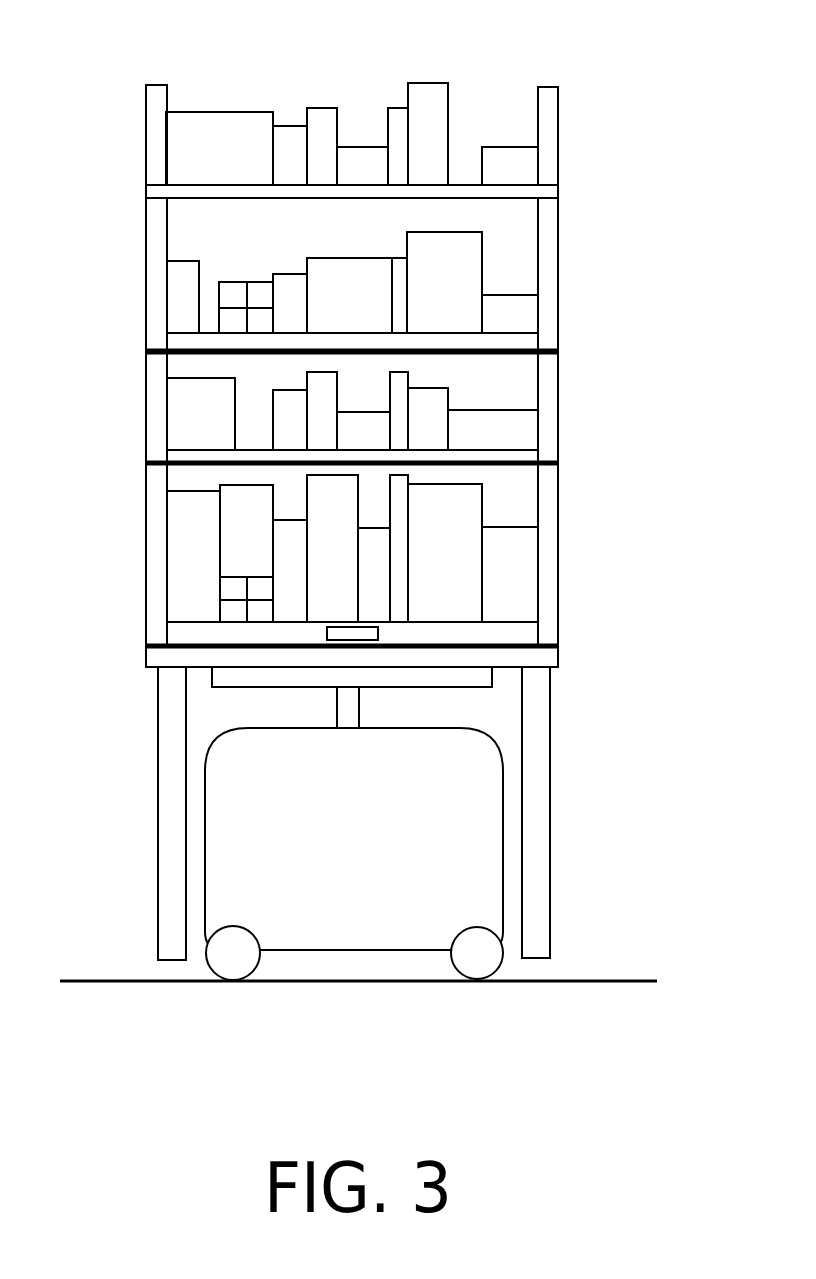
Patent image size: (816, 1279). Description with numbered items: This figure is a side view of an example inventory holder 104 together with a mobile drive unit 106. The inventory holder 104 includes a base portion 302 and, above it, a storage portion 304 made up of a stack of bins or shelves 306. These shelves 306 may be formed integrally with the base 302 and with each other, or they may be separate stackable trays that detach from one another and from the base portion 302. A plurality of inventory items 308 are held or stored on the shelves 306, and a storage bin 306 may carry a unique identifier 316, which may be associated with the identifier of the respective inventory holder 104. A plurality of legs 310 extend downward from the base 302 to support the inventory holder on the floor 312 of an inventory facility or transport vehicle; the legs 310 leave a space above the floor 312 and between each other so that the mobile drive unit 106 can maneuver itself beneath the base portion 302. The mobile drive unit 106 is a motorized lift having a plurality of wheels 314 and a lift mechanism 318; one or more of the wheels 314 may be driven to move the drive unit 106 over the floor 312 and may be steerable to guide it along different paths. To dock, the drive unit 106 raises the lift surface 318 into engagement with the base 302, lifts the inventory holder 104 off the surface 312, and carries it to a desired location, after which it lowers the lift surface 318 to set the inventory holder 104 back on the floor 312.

The inventory holder 104 is at (500, 72).
The mobile drive unit 106 is at (482, 827).
The base portion 302 is at (560, 663).
The storage portion 304 is at (560, 565).
The shelves 306 is at (548, 125).
The inventory items 308 is at (292, 133).
The legs 310 is at (167, 795).
The floor 312 is at (100, 978).
The wheels 314 is at (227, 962).
The unique identifier 316 is at (327, 637).
The lift mechanism 318 is at (235, 682).